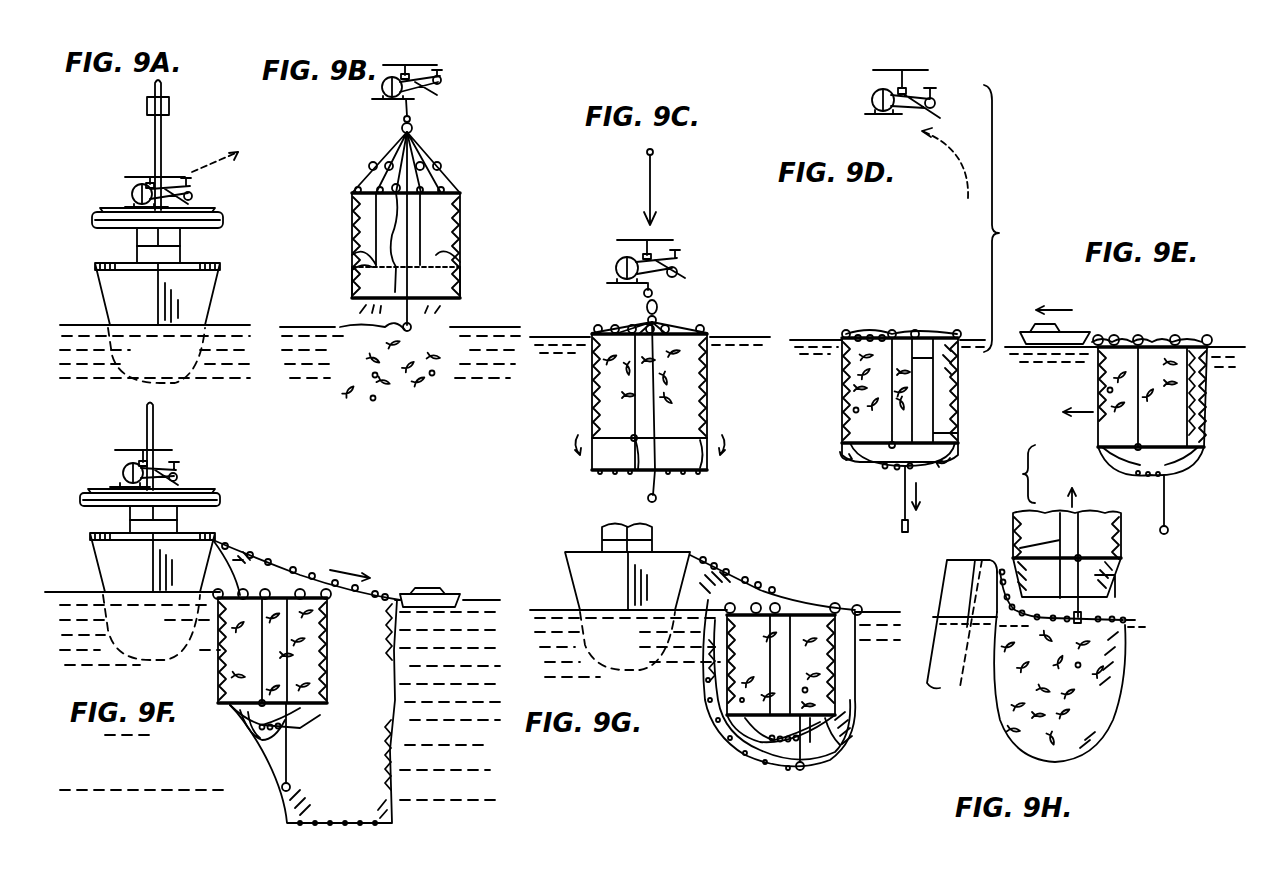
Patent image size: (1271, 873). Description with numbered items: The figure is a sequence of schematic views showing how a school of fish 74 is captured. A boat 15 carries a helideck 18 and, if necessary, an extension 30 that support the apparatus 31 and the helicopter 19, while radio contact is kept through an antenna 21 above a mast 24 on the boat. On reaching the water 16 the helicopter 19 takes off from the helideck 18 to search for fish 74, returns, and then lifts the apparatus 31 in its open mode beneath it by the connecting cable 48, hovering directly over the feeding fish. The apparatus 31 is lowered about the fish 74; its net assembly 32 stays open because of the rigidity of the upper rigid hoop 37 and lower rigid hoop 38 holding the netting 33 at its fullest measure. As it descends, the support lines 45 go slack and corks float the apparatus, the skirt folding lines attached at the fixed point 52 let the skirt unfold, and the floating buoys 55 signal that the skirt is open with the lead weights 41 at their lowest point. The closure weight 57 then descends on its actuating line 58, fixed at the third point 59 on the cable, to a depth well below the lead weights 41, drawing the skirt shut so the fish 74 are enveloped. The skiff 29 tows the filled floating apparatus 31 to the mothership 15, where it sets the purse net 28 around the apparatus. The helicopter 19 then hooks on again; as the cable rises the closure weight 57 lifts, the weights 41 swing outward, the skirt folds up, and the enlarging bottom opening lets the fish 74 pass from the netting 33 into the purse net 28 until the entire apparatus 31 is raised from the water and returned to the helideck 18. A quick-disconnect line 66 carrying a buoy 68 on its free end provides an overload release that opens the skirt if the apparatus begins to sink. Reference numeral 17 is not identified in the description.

In FIG. 9A, the boat 15 is at (221, 294).
In FIG. 9F, the boat 15 is at (88, 574).
In FIG. 9G, the boat 15 is at (562, 584).
In FIG. 9H, the boat 15 is at (937, 599).
In FIG. 9A, the water 16 is at (155, 354).
In FIG. 9B, the water 16 is at (400, 352).
In FIG. 9C, the water 16 is at (650, 352).
In FIG. 9D, the water 16 is at (887, 361).
In FIG. 9E, the water 16 is at (1125, 371).
In FIG. 9F, the water 16 is at (272, 696).
In FIG. 9G, the water 16 is at (715, 643).
In FIG. 9H, the water 16 is at (1041, 659).
In FIG. 9B, the splash 17 is at (395, 322).
In FIG. 9A, the helideck 18 is at (200, 208).
In FIG. 9F, the helideck 18 is at (198, 489).
In FIG. 9A, the helicopter 19 is at (160, 192).
In FIG. 9B, the helicopter 19 is at (440, 77).
In FIG. 9C, the helicopter 19 is at (662, 262).
In FIG. 9D, the helicopter 19 is at (920, 105).
In FIG. 9F, the helicopter 19 is at (158, 472).
In FIG. 9A, the antenna 21 is at (169, 104).
In FIG. 9A, the mast 24 is at (162, 140).
In FIG. 9F, the mast 24 is at (155, 420).
In FIG. 9F, the purse net 28 is at (394, 735).
In FIG. 9G, the purse net 28 is at (858, 735).
In FIG. 9H, the purse net 28 is at (1118, 705).
In FIG. 9E, the skiff or speed boat 29 is at (1075, 332).
In FIG. 9F, the skiff or speed boat 29 is at (445, 592).
In FIG. 9A, the extension 30 is at (223, 221).
In FIG. 9F, the extension 30 is at (220, 499).
In FIG. 9B, the apparatus 31 is at (489, 166).
In FIG. 9C, the apparatus 31 is at (737, 382).
In FIG. 9D, the apparatus 31 is at (815, 419).
In FIG. 9E, the apparatus 31 is at (1228, 432).
In FIG. 9F, the apparatus 31 is at (344, 672).
In FIG. 9G, the apparatus 31 is at (856, 687).
In FIG. 9H, the apparatus 31 is at (1138, 566).
In FIG. 9B, the net assembly 32 is at (473, 255).
In FIG. 9C, the net assembly 32 is at (718, 414).
In FIG. 9D, the net assembly 32 is at (970, 434).
In FIG. 9E, the net assembly 32 is at (1186, 456).
In FIG. 9F, the net assembly 32 is at (330, 705).
In FIG. 9G, the net assembly 32 is at (846, 704).
In FIG. 9H, the net assembly 32 is at (1136, 538).
In FIG. 9B, the netting 33 is at (461, 215).
In FIG. 9C, the netting 33 is at (708, 362).
In FIG. 9D, the netting 33 is at (947, 406).
In FIG. 9E, the netting 33 is at (1200, 400).
In FIG. 9F, the netting 33 is at (328, 686).
In FIG. 9G, the netting 33 is at (838, 640).
In FIG. 9H, the netting 33 is at (1012, 525).
In FIG. 9B, the upper rigid hoop 37 is at (462, 191).
In FIG. 9C, the upper rigid hoop 37 is at (709, 332).
In FIG. 9D, the upper rigid hoop 37 is at (932, 338).
In FIG. 9E, the upper rigid hoop 37 is at (1209, 354).
In FIG. 9F, the upper rigid hoop 37 is at (329, 603).
In FIG. 9G, the upper rigid hoop 37 is at (730, 625).
In FIG. 9B, the lower rigid hoop 38 is at (462, 290).
In FIG. 9C, the lower rigid hoop 38 is at (709, 468).
In FIG. 9D, the lower rigid hoop 38 is at (830, 443).
In FIG. 9E, the lower rigid hoop 38 is at (1096, 450).
In FIG. 9F, the lower rigid hoop 38 is at (243, 713).
In FIG. 9G, the lower rigid hoop 38 is at (748, 740).
In FIG. 9H, the lower rigid hoop 38 is at (1112, 580).
In FIG. 9B, the lead weights 41 is at (350, 250).
In FIG. 9C, the lead weights 41 is at (605, 474).
In FIG. 9D, the lead weights 41 is at (883, 470).
In FIG. 9E, the lead weights 41 is at (1142, 478).
In FIG. 9F, the lead weights 41 is at (258, 745).
In FIG. 9G, the lead weights 41 is at (768, 762).
In FIG. 9H, the lead weights 41 is at (1128, 621).
In FIG. 9B, the support lines 45 is at (368, 162).
In FIG. 9B, the fixed point on cable 48 is at (414, 140).
In FIG. 9C, the fixed point on cable 48 is at (658, 324).
In FIG. 9B, the fixed point 52 is at (401, 126).
In FIG. 9C, the fixed point 52 is at (658, 305).
In FIG. 9B, the buoy 55 is at (440, 164).
In FIG. 9C, the buoy 55 is at (595, 326).
In FIG. 9D, the buoy 55 is at (847, 328).
In FIG. 9E, the buoy 55 is at (1208, 336).
In FIG. 9F, the buoy 55 is at (253, 596).
In FIG. 9G, the buoy 55 is at (838, 594).
In FIG. 9B, the closure weight 57 is at (412, 325).
In FIG. 9C, the closure weight 57 is at (657, 497).
In FIG. 9D, the closure weight 57 is at (900, 527).
In FIG. 9E, the closure weight 57 is at (1169, 528).
In FIG. 9F, the closure weight 57 is at (291, 786).
In FIG. 9G, the closure weight 57 is at (798, 770).
In FIG. 9H, the closure weight 57 is at (1082, 626).
In FIG. 9B, the actuating line 58 is at (410, 228).
In FIG. 9C, the actuating line 58 is at (658, 396).
In FIG. 9D, the actuating line 58 is at (957, 434).
In FIG. 9E, the actuating line 58 is at (1176, 462).
In FIG. 9F, the actuating line 58 is at (298, 722).
In FIG. 9G, the actuating line 58 is at (830, 755).
In FIG. 9H, the actuating line 58 is at (1090, 597).
In FIG. 9B, the third point 59 is at (411, 118).
In FIG. 9C, the third point 59 is at (653, 292).
In FIG. 9C, the quick-disconnect line 66 is at (630, 428).
In FIG. 9D, the quick-disconnect line 66 is at (863, 457).
In FIG. 9G, the quick-disconnect line 66 is at (762, 658).
In FIG. 9H, the quick-disconnect line 66 is at (1012, 546).
In FIG. 9E, the buoy 68 is at (1142, 335).
In FIG. 9B, the fish 74 is at (400, 438).
In FIG. 9C, the fish 74 is at (601, 381).
In FIG. 9D, the fish 74 is at (855, 427).
In FIG. 9E, the fish 74 is at (1104, 436).
In FIG. 9F, the fish 74 is at (250, 666).
In FIG. 9G, the fish 74 is at (731, 688).
In FIG. 9H, the fish 74 is at (1010, 694).